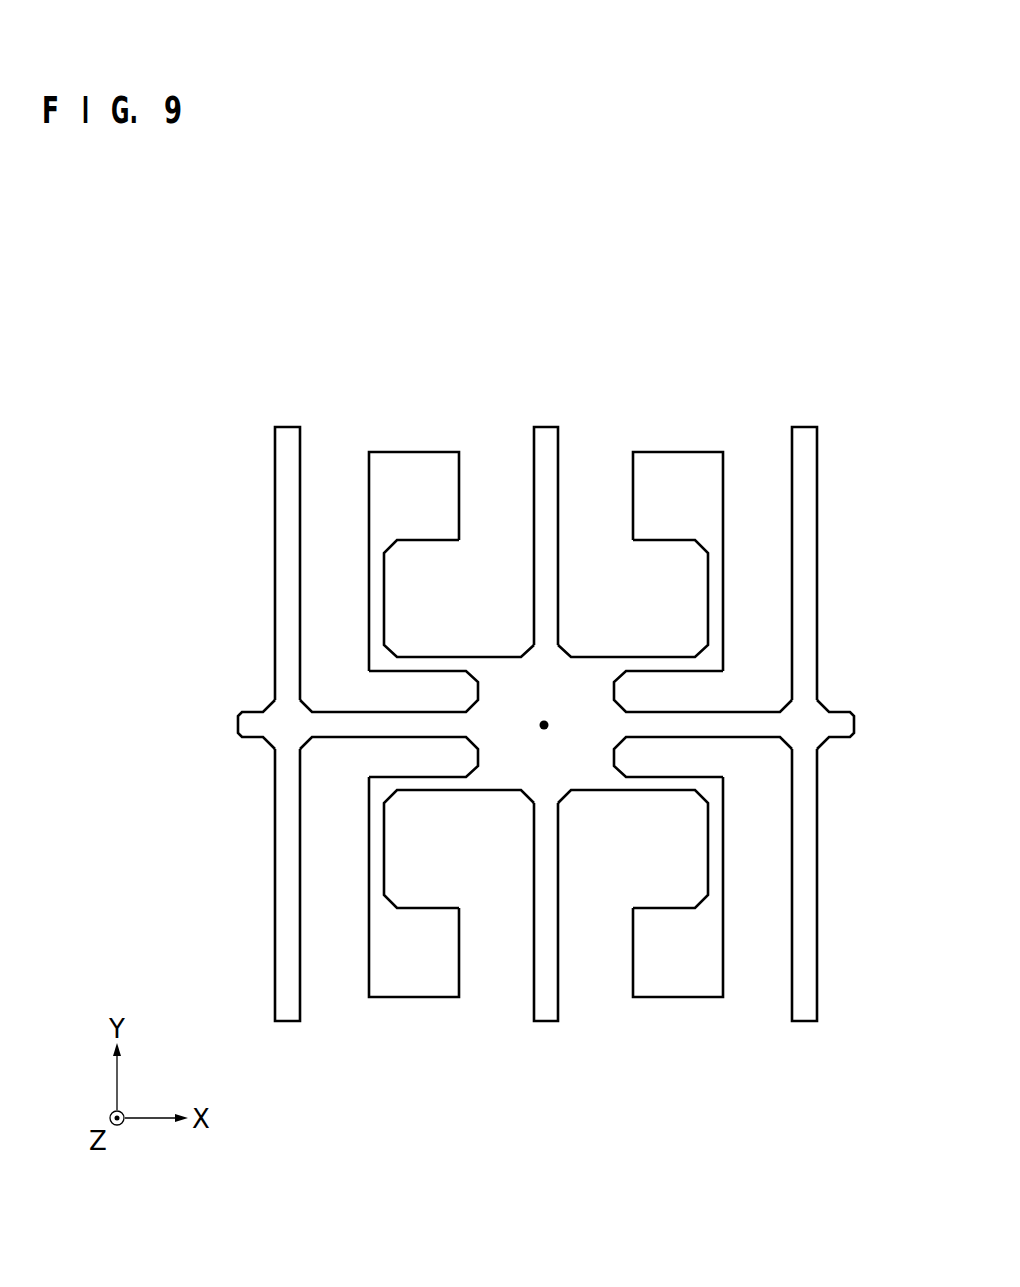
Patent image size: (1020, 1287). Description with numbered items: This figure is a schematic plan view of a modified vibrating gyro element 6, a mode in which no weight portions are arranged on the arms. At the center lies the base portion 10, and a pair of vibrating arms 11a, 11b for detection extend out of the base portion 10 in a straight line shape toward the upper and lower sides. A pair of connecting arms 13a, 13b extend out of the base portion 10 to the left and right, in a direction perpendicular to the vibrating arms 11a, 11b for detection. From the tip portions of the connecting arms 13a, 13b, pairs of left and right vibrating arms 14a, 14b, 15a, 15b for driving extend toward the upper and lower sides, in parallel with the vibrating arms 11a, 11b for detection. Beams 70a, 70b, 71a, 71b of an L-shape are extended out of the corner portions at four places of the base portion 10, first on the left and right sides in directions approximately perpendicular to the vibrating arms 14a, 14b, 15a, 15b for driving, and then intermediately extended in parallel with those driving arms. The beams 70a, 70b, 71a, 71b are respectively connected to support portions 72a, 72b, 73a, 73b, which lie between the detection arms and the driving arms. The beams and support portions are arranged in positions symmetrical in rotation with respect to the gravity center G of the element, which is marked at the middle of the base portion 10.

The vibrating gyro element 6 is at (864, 334).
The base portion 10 is at (598, 763).
The vibrating arm for detection 11a is at (552, 561).
The vibrating arm for detection 11b is at (550, 879).
The connecting arm 13a is at (333, 722).
The connecting arm 13b is at (752, 720).
The vibrating arm for driving 14a is at (285, 567).
The vibrating arm for driving 14b is at (285, 881).
The vibrating arm for driving 15a is at (805, 567).
The vibrating arm for driving 15b is at (805, 881).
The beam 70a is at (378, 607).
The beam 70b is at (711, 605).
The beam 71a is at (378, 850).
The beam 71b is at (711, 852).
The support portion 72a is at (410, 460).
The support portion 72b is at (674, 458).
The support portion 73a is at (415, 987).
The support portion 73b is at (676, 987).
The gravity center G is at (543, 705).